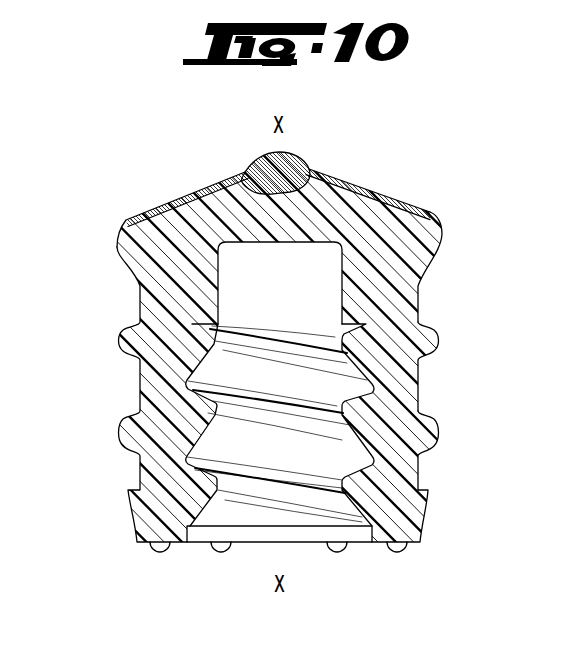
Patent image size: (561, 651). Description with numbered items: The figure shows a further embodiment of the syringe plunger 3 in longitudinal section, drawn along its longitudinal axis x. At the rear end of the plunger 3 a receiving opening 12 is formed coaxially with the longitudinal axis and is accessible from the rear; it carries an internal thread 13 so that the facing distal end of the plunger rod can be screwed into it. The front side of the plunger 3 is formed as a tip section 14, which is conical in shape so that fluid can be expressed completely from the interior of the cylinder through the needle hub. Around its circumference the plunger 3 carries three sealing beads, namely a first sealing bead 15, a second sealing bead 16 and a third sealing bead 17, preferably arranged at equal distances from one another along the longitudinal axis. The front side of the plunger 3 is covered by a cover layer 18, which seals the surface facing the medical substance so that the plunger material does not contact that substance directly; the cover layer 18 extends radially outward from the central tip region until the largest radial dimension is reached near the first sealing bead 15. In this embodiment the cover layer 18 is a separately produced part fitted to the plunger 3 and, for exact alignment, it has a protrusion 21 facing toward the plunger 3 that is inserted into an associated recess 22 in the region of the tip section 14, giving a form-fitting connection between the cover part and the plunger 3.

The plunger 3 is at (122, 468).
The receiving opening 12 is at (420, 508).
The internal thread 13 is at (328, 500).
The tip section 14 is at (313, 200).
The first sealing bead 15 is at (435, 250).
The second sealing bead 16 is at (433, 343).
The third sealing bead 17 is at (433, 440).
The cover layer 18 is at (181, 200).
The protrusion 21 is at (299, 170).
The recess 22 is at (237, 180).